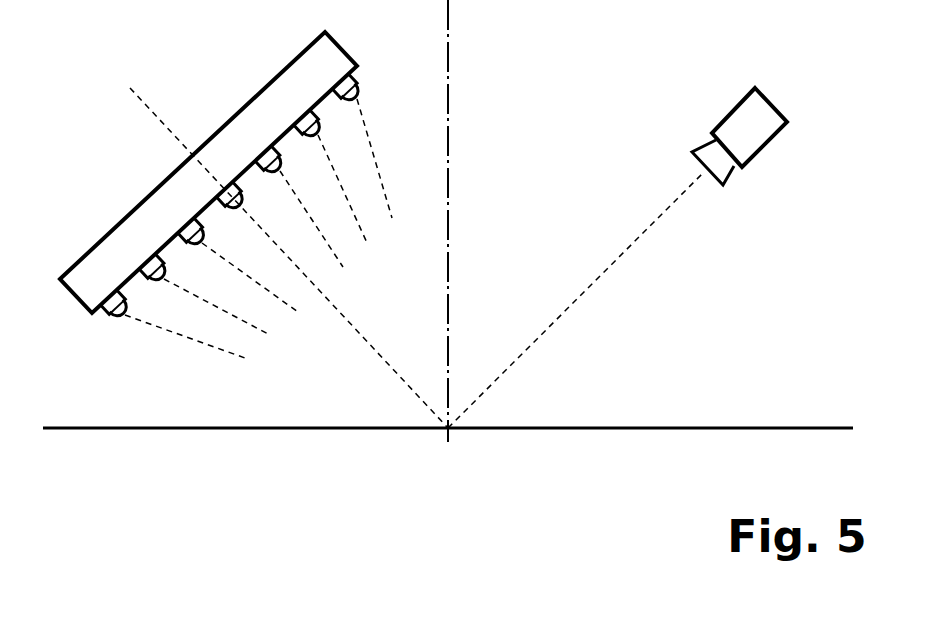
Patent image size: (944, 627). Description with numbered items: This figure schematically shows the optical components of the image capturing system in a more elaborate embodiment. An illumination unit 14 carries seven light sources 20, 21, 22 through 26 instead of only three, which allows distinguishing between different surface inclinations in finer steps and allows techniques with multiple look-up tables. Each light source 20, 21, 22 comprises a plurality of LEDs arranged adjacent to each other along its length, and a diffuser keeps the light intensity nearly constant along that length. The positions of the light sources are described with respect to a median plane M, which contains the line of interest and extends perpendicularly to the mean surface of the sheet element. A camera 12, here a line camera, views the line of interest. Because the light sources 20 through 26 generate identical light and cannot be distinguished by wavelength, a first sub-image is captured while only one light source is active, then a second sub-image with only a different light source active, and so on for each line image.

The camera 12 is at (763, 112).
The illumination unit 14 is at (247, 121).
The light source 20 is at (108, 313).
The light source 21 is at (150, 260).
The light source 22 is at (190, 224).
The light source 26 is at (355, 77).
The median plane M is at (448, 92).